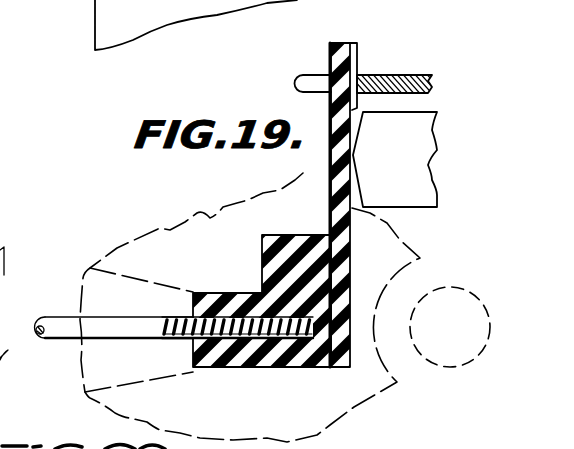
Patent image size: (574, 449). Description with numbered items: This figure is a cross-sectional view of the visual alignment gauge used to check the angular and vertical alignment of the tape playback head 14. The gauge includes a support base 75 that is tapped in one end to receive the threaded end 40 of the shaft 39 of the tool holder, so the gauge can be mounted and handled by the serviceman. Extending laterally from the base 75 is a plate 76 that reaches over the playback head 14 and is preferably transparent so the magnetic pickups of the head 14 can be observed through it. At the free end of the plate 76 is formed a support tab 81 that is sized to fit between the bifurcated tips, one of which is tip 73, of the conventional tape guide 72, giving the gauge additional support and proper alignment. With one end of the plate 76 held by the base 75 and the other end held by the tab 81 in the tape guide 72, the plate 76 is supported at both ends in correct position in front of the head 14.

The tape playback head 14 is at (422, 160).
The shaft 39 is at (63, 318).
The threaded end 40 is at (180, 340).
The tape guide 72 is at (405, 73).
The bifurcated tip 73 is at (300, 78).
The support base 75 is at (273, 368).
The transparent plate 76 is at (331, 160).
The support tab 81 is at (357, 45).